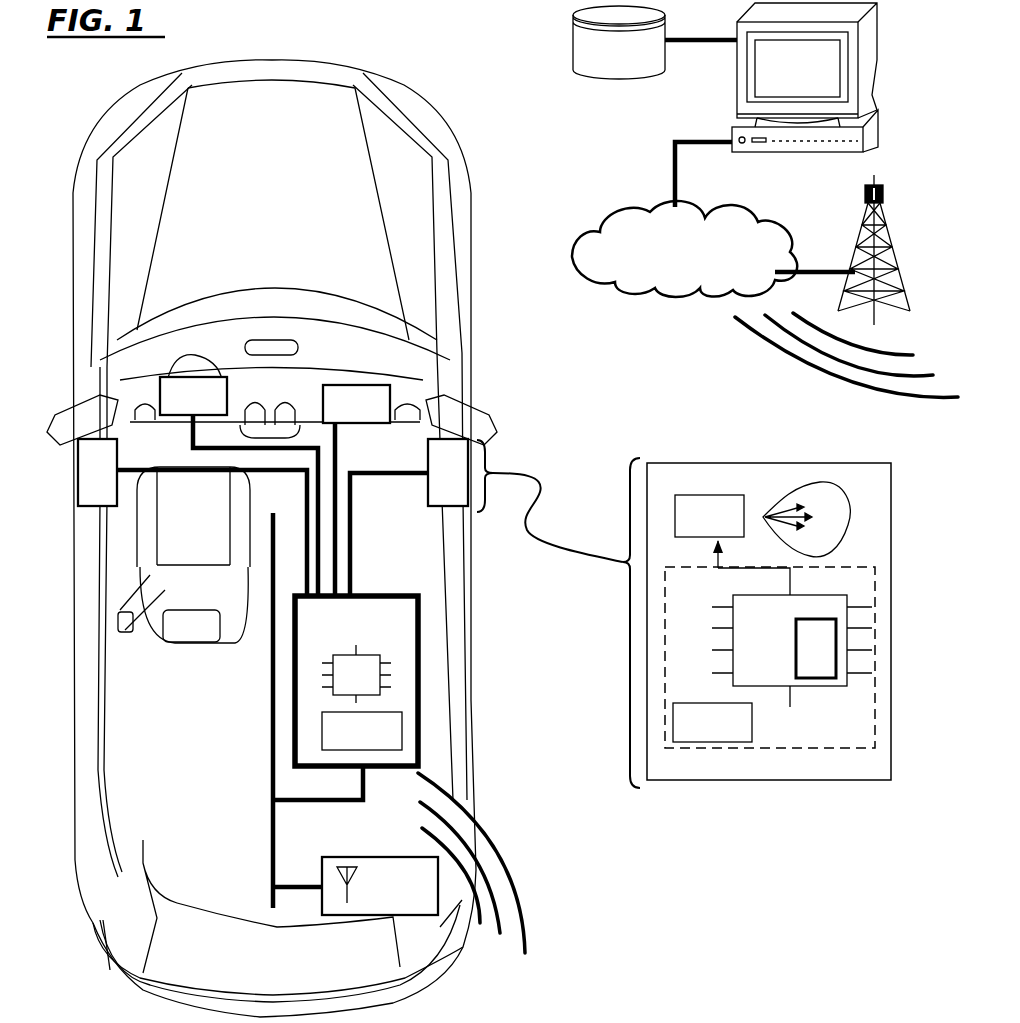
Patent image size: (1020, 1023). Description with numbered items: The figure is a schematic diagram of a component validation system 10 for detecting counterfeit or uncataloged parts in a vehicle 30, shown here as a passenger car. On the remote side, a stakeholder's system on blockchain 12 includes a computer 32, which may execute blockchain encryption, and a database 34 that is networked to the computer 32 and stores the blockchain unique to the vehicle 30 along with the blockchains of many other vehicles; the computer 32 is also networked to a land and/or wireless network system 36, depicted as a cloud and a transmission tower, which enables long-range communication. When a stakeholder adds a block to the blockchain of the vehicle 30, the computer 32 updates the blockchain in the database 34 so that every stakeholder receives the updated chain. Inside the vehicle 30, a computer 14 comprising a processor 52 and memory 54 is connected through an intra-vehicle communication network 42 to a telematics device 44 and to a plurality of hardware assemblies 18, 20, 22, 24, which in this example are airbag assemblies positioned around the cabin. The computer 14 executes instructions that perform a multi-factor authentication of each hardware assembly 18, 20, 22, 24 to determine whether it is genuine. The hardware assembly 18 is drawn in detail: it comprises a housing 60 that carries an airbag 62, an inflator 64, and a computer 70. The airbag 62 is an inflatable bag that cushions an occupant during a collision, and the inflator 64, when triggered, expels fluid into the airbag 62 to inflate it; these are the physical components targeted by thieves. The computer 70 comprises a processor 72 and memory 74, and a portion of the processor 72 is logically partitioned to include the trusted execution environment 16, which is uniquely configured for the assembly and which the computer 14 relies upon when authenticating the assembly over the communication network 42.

The component validation system 10 is at (728, 872).
The stakeholder's system on blockchain 12 is at (719, 96).
The computer 14 is at (369, 635).
The trusted execution environment 16 is at (828, 661).
The hardware assembly 18 is at (461, 483).
The hardware assembly 20 is at (370, 416).
The hardware assembly 22 is at (206, 408).
The hardware assembly 24 is at (110, 483).
The vehicle 30 is at (428, 107).
The computer 32 is at (810, 76).
The database 34 is at (632, 63).
The land and/or wireless network system 36 is at (852, 222).
The communication network 42 is at (262, 873).
The telematics device 44 is at (408, 900).
The processor 52 is at (367, 687).
The memory 54 is at (375, 743).
The housing 60 is at (775, 462).
The airbag 62 is at (840, 521).
The inflator 64 is at (722, 527).
The computer 70 is at (857, 751).
The processor 72 is at (770, 623).
The memory 74 is at (725, 734).